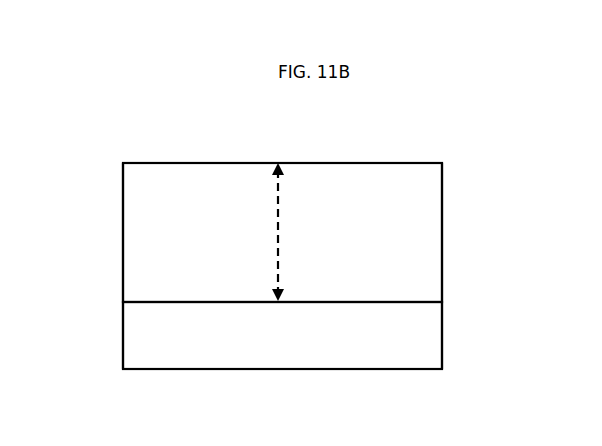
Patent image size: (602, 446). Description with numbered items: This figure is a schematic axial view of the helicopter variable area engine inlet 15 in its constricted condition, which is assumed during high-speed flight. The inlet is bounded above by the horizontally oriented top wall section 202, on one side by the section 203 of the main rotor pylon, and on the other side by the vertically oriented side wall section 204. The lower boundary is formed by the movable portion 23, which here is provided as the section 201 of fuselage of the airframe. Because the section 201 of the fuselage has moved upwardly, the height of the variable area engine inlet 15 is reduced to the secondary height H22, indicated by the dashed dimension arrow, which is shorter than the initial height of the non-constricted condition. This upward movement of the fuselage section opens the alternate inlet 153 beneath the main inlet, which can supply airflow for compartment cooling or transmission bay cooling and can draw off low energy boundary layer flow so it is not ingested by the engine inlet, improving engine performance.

The variable area engine inlet 15 is at (188, 227).
The alternate inlet 153 is at (305, 360).
The secondary height H22 is at (275, 255).
The horizontally oriented top wall section 202 is at (370, 155).
The section of a main rotor pylon 203 is at (114, 244).
The vertically oriented side wall section 204 is at (455, 277).
The movable portion 23 is at (344, 339).
The section of fuselage 201 is at (400, 312).